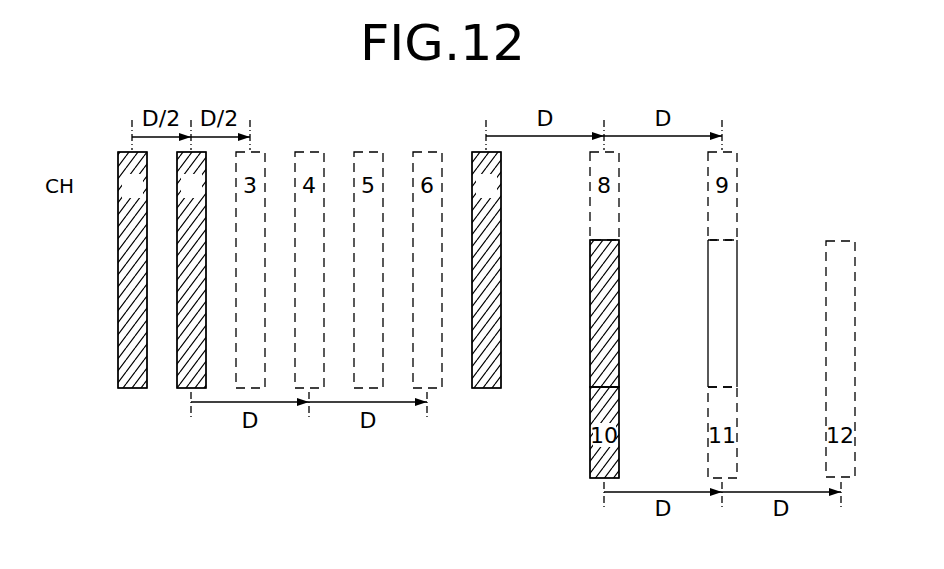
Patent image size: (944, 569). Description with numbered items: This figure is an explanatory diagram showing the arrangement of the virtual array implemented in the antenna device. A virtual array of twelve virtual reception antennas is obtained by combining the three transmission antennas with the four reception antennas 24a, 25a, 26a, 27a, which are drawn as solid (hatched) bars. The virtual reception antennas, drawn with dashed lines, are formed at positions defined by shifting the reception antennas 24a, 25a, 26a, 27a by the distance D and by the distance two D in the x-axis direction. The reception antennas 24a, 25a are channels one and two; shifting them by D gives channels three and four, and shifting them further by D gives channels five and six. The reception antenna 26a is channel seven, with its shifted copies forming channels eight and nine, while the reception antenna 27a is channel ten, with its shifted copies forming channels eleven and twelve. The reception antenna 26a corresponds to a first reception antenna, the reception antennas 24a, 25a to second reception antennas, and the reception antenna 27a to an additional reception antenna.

The reception antenna 24a is at (120, 350).
The reception antenna 25a is at (177, 380).
The reception antenna 26a is at (486, 390).
The reception antenna 27a is at (592, 365).